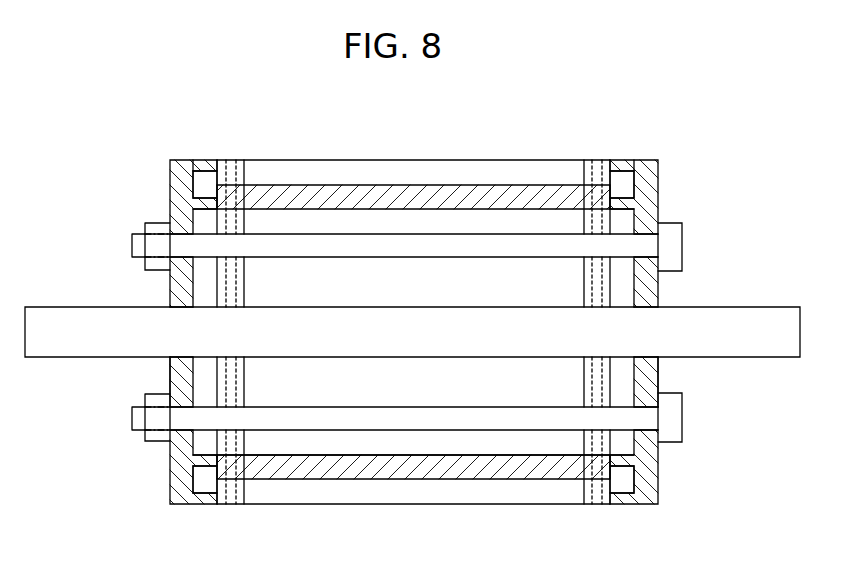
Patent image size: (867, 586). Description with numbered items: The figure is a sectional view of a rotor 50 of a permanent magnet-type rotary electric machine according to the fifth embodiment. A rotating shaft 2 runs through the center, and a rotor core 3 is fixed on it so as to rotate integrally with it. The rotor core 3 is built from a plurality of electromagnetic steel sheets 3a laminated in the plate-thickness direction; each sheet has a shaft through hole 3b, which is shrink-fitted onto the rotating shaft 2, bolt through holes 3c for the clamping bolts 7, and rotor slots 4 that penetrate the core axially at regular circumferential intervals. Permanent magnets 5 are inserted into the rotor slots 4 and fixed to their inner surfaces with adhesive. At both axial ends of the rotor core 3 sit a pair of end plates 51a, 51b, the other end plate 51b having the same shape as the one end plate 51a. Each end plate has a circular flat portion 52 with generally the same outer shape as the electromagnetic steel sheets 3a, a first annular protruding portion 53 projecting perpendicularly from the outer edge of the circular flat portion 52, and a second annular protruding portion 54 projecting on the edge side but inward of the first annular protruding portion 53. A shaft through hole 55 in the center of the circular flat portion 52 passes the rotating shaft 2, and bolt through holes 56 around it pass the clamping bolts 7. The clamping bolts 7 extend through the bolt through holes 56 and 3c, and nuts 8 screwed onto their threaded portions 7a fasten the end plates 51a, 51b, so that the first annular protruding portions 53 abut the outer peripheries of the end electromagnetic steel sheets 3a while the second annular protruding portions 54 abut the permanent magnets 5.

The rotating shaft 2 is at (769, 317).
The rotor core 3 is at (288, 175).
The electromagnetic steel sheets 3a is at (236, 160).
The shaft through hole 3b is at (536, 307).
The bolt through holes 3c is at (375, 242).
The rotor slots 4 is at (497, 195).
The permanent magnets 5 is at (335, 195).
The clamping bolts 7 is at (675, 249).
The threaded portions 7a is at (135, 251).
The nuts 8 is at (155, 270).
The rotor 50 is at (653, 123).
The one end plate 51a is at (165, 160).
The other end plate 51b is at (663, 160).
The circular flat portion 52 is at (175, 372).
The first annular protruding portion 53 is at (200, 168).
The second annular protruding portion 54 is at (205, 192).
The shaft through hole 55 is at (181, 320).
The bolt through holes 56 is at (180, 242).